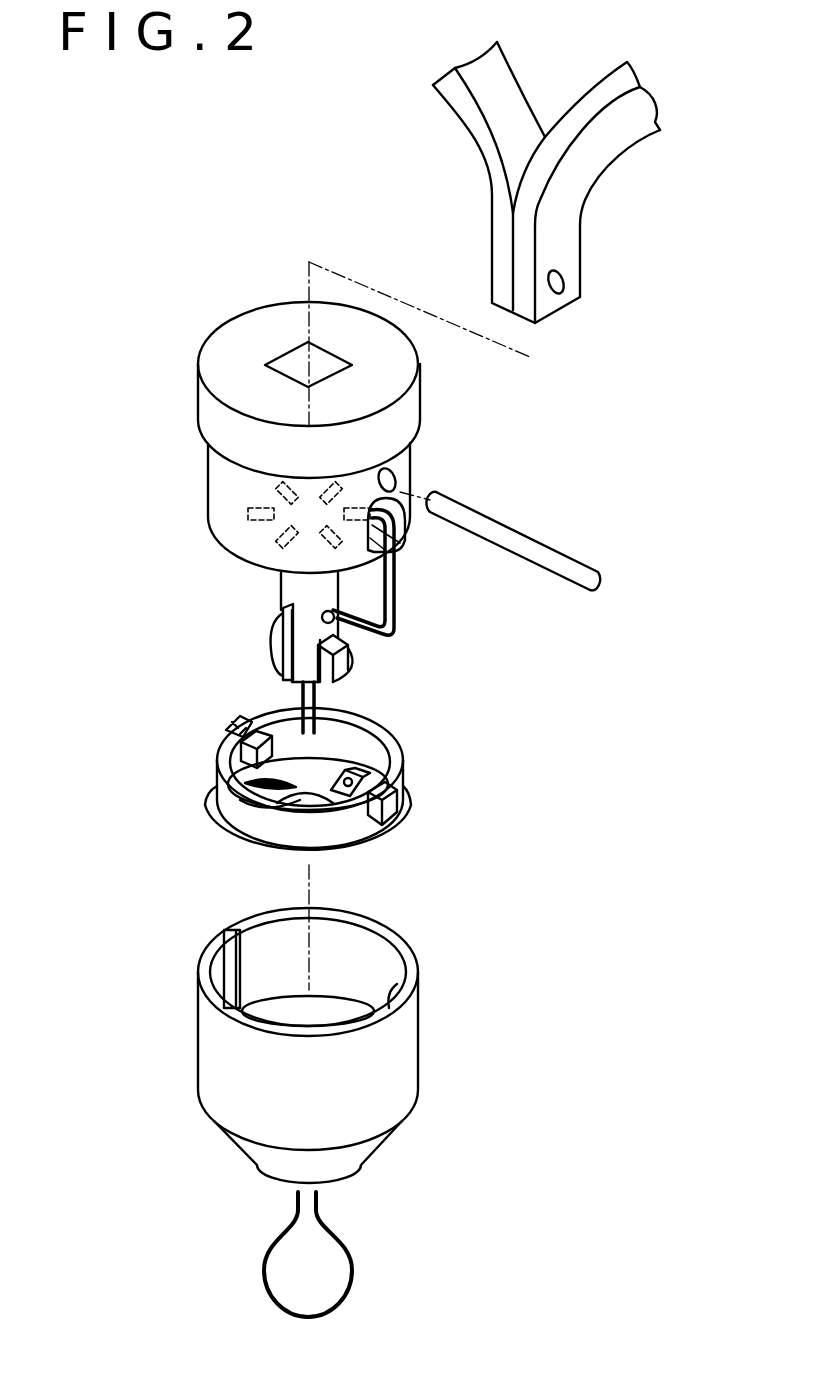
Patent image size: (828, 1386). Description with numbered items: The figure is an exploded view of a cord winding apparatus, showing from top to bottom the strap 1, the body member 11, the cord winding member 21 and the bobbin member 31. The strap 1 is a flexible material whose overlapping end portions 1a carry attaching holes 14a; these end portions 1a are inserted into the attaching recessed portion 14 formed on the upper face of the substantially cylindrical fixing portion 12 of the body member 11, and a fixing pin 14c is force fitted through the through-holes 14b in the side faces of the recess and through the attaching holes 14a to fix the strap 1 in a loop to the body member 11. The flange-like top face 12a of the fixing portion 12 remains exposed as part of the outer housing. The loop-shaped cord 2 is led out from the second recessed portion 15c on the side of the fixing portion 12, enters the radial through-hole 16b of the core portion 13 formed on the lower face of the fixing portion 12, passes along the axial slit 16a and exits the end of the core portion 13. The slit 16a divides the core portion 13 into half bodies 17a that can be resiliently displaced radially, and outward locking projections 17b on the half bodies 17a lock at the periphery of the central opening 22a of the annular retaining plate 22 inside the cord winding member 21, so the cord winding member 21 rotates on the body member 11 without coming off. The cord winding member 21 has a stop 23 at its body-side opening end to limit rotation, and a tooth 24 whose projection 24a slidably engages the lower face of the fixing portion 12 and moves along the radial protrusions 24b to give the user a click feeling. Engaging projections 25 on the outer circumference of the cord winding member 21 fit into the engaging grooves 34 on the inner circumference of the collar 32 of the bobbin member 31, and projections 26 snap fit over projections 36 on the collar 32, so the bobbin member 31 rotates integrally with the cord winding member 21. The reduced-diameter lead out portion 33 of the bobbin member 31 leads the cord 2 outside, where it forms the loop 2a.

The strap 1 is at (603, 196).
The end portion of the strap 1a is at (503, 272).
The attaching hole 14a is at (572, 284).
The body member 11 is at (312, 480).
The fixing portion 12 is at (220, 470).
The top face of the fixing portion 12a is at (405, 372).
The attaching recessed portion 14 is at (295, 358).
The protrusions 24b is at (248, 509).
The through-hole 14b is at (398, 470).
The fixing pin 14c is at (545, 555).
The second recessed portion 15c is at (402, 542).
The core portion 13 is at (285, 578).
The slit 16a is at (288, 651).
The through-hole 16b is at (320, 614).
The half body 17a is at (352, 645).
The locking projection 17b is at (270, 641).
The loop-shaped cord 2 is at (396, 608).
The loop 2a is at (352, 1292).
The cord winding member 21 is at (316, 784).
The retaining plate 22 is at (262, 800).
The central opening 22a is at (270, 786).
The stop 23 is at (238, 752).
The tooth 24 is at (356, 776).
The projection 24a is at (362, 786).
The engaging projection 25 is at (240, 738).
The projections 26 is at (242, 850).
The bobbin member 31 is at (316, 1031).
The collar 32 is at (212, 1043).
The lead out portion 33 is at (365, 1152).
The engaging groove 34 is at (232, 948).
The projections 36 is at (340, 1005).